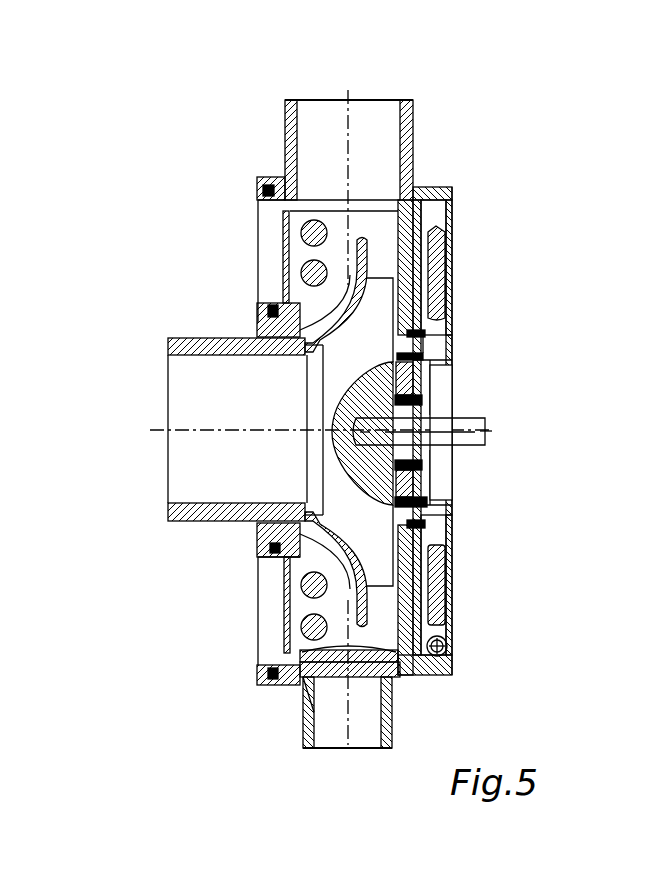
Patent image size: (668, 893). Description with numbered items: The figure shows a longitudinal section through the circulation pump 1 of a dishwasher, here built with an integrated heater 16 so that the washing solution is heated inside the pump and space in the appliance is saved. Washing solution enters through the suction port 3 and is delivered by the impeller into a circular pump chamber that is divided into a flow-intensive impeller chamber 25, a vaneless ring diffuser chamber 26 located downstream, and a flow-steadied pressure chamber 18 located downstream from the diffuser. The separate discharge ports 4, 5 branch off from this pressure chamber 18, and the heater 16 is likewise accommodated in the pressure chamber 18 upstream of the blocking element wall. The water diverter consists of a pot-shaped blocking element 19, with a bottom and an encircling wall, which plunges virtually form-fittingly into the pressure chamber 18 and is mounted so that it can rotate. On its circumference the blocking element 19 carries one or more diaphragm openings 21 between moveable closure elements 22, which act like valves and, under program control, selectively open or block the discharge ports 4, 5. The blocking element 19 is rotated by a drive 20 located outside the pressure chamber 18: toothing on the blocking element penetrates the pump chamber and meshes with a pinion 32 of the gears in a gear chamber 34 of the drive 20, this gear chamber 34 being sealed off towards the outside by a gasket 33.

The circulation pump 1 is at (233, 309).
The suction port 3 is at (204, 521).
The discharge port 4 is at (344, 749).
The discharge port 5 is at (415, 103).
The heater 16 is at (301, 233).
The pressure chamber 18 is at (410, 200).
The blocking element 19 is at (450, 558).
The drive 20 is at (447, 644).
The diaphragm opening 21 is at (320, 197).
The closure element 22 is at (306, 690).
The impeller chamber 25 is at (450, 337).
The ring diffuser chamber 26 is at (445, 255).
The pinion 32 is at (453, 282).
The gasket 33 is at (440, 508).
The gear chamber 34 is at (448, 208).